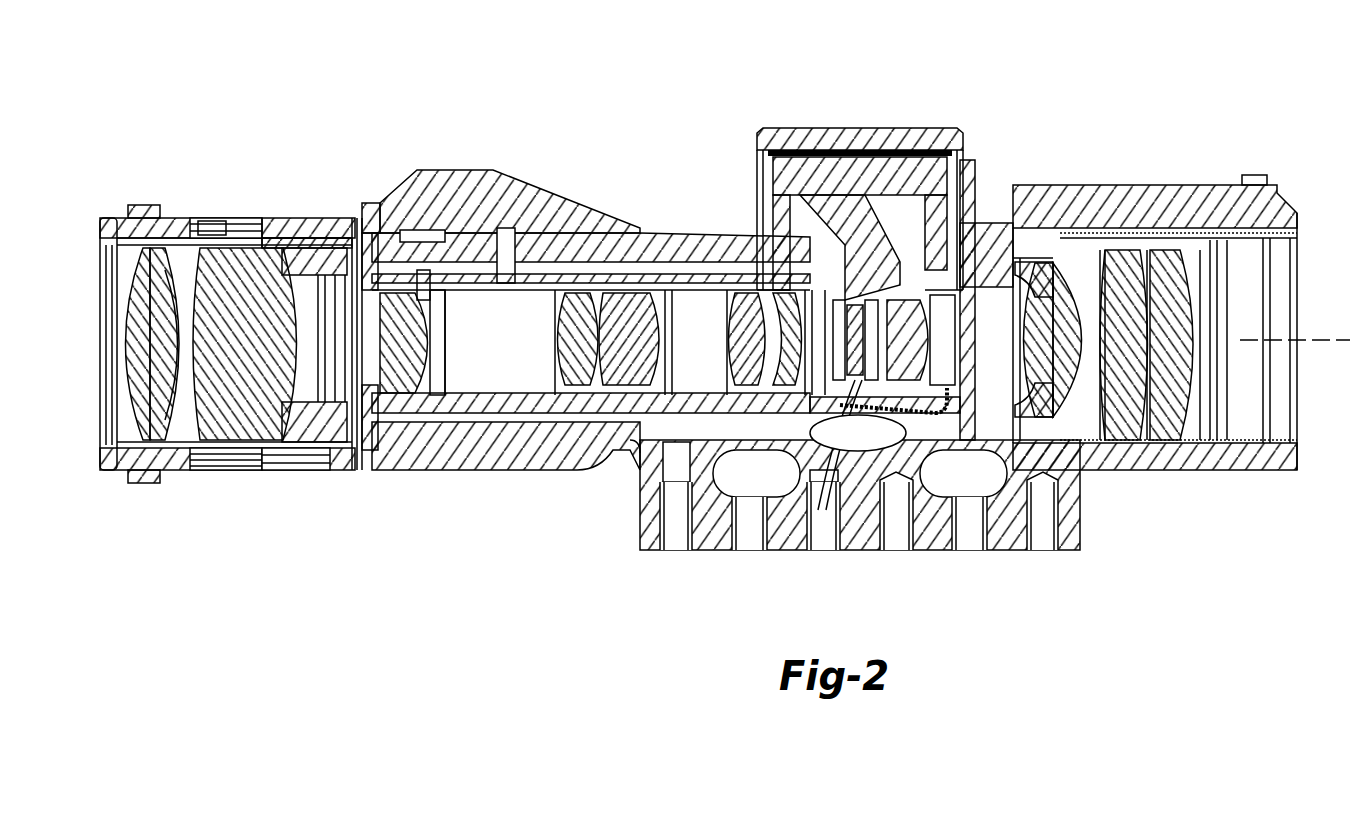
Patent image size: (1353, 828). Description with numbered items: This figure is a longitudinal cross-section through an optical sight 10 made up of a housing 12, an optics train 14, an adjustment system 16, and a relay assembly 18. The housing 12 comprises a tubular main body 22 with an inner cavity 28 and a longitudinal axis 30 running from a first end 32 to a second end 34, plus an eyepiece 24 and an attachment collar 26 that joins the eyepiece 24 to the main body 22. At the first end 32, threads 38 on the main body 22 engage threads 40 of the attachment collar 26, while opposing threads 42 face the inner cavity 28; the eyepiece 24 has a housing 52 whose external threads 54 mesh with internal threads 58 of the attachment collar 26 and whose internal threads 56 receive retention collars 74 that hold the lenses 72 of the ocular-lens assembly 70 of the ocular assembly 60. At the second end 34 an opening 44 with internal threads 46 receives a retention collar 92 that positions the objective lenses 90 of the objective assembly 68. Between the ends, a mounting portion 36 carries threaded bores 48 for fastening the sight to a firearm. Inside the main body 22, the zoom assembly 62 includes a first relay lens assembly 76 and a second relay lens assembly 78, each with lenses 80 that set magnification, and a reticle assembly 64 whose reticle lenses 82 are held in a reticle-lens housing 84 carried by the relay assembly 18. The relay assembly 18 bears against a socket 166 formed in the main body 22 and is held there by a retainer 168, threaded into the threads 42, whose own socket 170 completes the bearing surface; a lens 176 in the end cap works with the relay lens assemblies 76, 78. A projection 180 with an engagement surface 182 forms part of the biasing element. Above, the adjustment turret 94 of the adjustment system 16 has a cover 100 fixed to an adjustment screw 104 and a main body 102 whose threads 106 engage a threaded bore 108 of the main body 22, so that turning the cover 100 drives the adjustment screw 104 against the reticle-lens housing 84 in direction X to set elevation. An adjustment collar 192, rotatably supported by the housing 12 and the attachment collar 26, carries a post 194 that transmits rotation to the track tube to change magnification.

The optical sight 10 is at (325, 105).
The housing 12 is at (667, 236).
The optics train 14 is at (193, 282).
The adjustment system 16 is at (826, 282).
The relay assembly 18 is at (560, 425).
The main body 22 is at (628, 236).
The eyepiece 24 is at (150, 210).
The attachment collar 26 is at (283, 222).
The inner cavity 28 is at (968, 252).
The longitudinal axis 30 is at (1310, 340).
The first end 32 is at (362, 228).
The second end 34 is at (1300, 215).
The mounting portion 36 is at (892, 521).
The threads 38 is at (372, 232).
The threads 40 is at (318, 450).
The threads 42 is at (420, 232).
The opening 44 is at (1290, 242).
The internal threads 46 is at (1245, 230).
The threaded bores 48 is at (740, 545).
The housing 52 is at (140, 483).
The external threads 54 is at (265, 222).
The internal threads 56 is at (270, 440).
The internal threads 58 is at (265, 225).
The ocular assembly 60 is at (195, 392).
The zoom assembly 62 is at (712, 335).
The reticle assembly 64 is at (878, 300).
The objective assembly 68 is at (1179, 334).
The ocular-lens assembly 70 is at (112, 265).
The lenses 72 is at (240, 345).
The retention collars 74 is at (303, 240).
The first relay lens assembly 76 is at (592, 286).
The second relay lens assembly 78 is at (738, 294).
The lenses 80 is at (620, 345).
The reticle lenses 82 is at (839, 454).
The reticle-lens housing 84 is at (843, 300).
The objective lenses 90 is at (1180, 395).
The retention collar 92 is at (1270, 446).
The adjustment turret 94 is at (766, 132).
The cover 100 is at (780, 135).
The main body 102 is at (770, 200).
The adjustment screw 104 is at (880, 283).
The threads 106 is at (762, 218).
The threaded bore 108 is at (912, 158).
The socket 166 is at (455, 290).
The retainer 168 is at (302, 297).
The socket 170 is at (409, 342).
The lens 176 is at (410, 358).
The projection 180 is at (872, 415).
The engagement surface 182 is at (945, 430).
The adjustment collar 192 is at (457, 180).
The post 194 is at (505, 232).